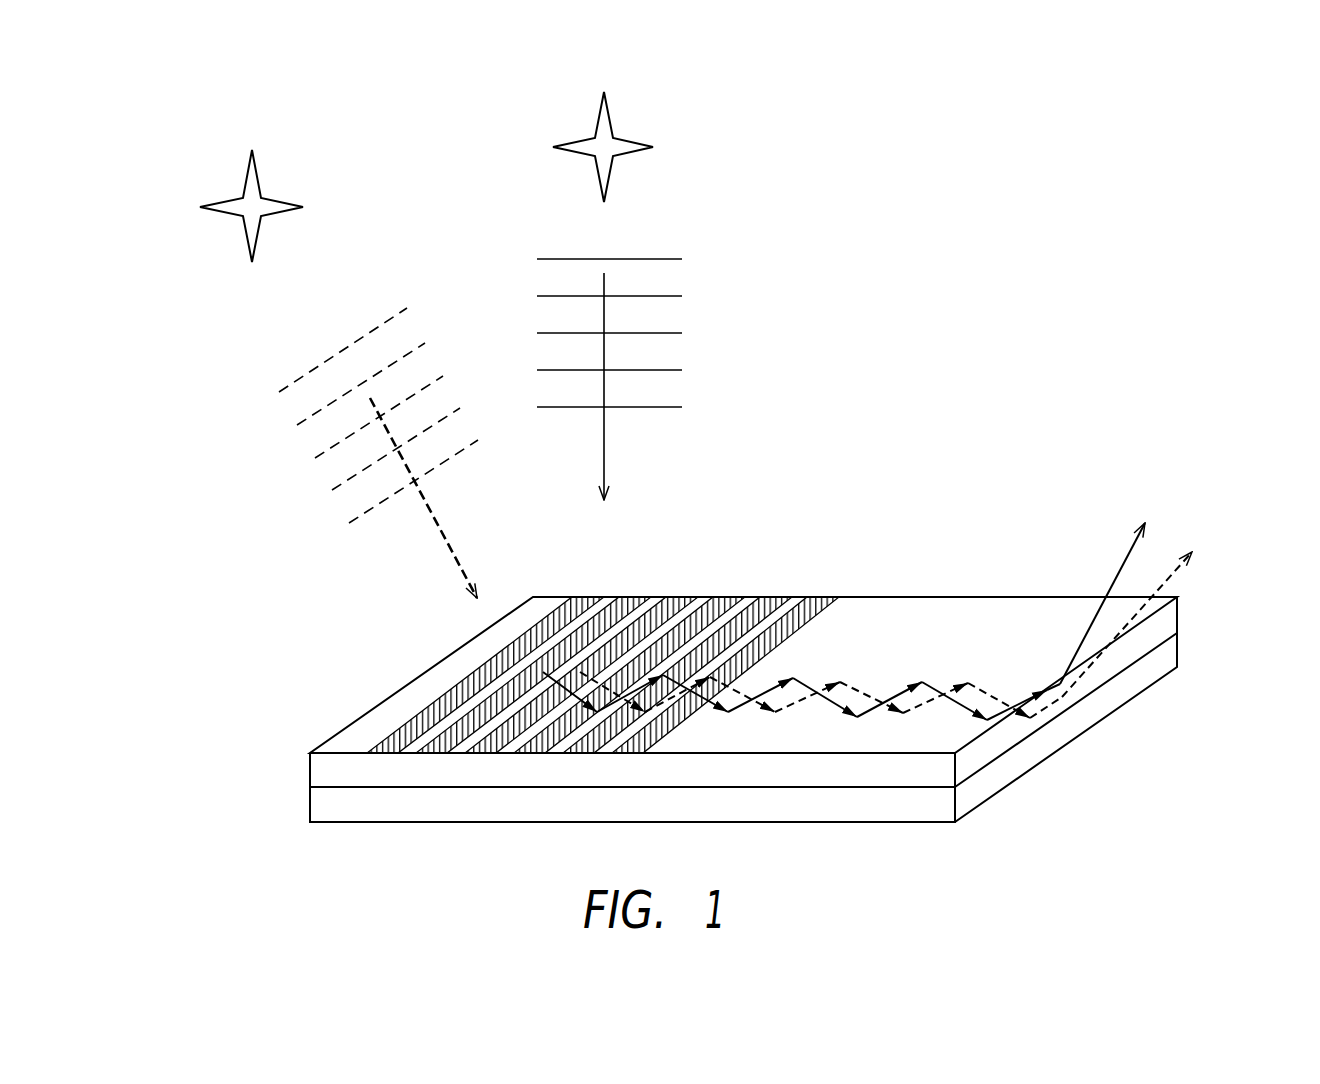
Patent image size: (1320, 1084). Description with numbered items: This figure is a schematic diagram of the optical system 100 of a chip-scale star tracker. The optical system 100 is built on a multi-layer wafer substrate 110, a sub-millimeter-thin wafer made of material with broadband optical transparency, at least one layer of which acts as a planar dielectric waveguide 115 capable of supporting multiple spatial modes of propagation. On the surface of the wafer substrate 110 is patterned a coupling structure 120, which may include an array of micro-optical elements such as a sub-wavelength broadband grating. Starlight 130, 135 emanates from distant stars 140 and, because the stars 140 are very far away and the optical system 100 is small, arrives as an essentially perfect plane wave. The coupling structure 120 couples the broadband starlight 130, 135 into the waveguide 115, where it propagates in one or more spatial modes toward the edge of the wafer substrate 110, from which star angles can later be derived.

The optical system 100 is at (960, 353).
The wafer substrate 110 is at (310, 805).
The planar dielectric waveguide 115 is at (310, 770).
The coupling structure 120 is at (588, 583).
The starlight 130 is at (657, 370).
The starlight 135 is at (316, 456).
The stars 140 is at (236, 197).